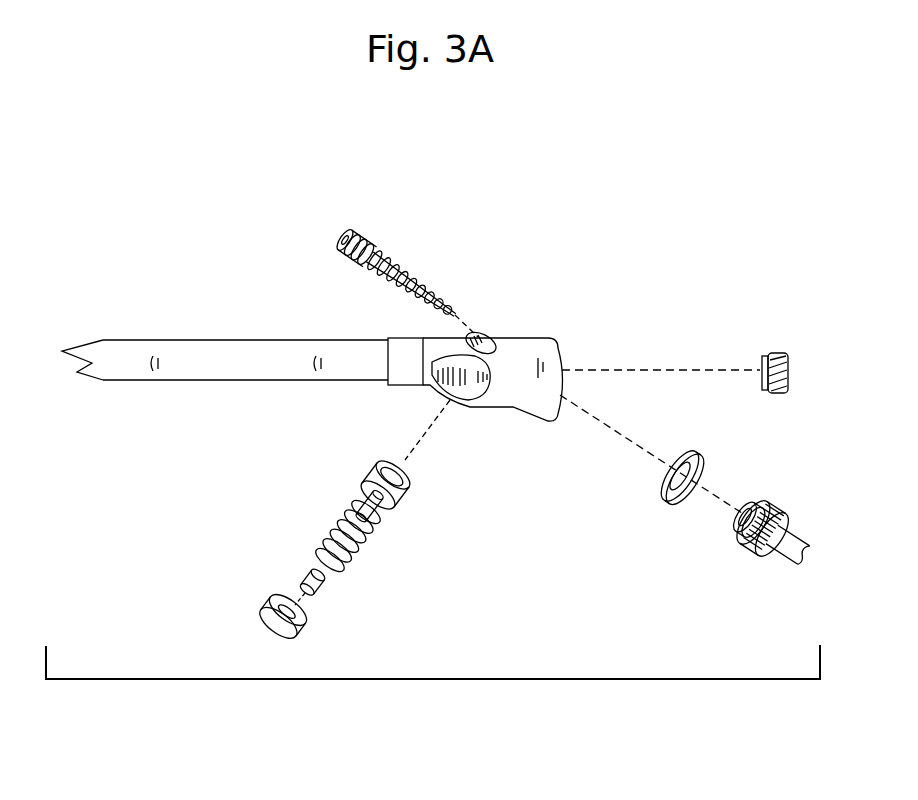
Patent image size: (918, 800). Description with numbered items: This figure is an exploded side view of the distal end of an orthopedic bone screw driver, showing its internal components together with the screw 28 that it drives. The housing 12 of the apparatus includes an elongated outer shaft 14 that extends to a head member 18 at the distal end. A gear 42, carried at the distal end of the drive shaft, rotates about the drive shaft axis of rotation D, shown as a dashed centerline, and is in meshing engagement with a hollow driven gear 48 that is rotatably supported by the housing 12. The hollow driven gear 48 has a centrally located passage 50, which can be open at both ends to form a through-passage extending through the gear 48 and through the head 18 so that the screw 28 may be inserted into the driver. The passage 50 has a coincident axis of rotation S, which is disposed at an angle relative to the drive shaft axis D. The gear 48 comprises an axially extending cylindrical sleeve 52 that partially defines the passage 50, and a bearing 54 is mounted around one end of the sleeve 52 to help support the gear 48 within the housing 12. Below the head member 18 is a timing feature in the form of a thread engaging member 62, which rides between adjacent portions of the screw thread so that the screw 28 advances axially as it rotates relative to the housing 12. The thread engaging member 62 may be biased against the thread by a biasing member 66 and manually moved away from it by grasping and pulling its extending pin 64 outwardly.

The housing 12 is at (243, 391).
The elongated outer shaft 14 is at (214, 352).
The head member 18 is at (526, 350).
The screw 28 is at (387, 258).
The gear 42 is at (778, 352).
The hollow driven gear 48 is at (740, 529).
The passage 50 is at (740, 515).
The cylindrical sleeve 52 is at (752, 503).
The bearing 54 is at (666, 503).
The thread engaging member 62 is at (397, 493).
The extending pin 64 is at (320, 580).
The biasing member 66 is at (327, 532).
The axis of rotation D is at (650, 370).
The axis of rotation S is at (618, 430).